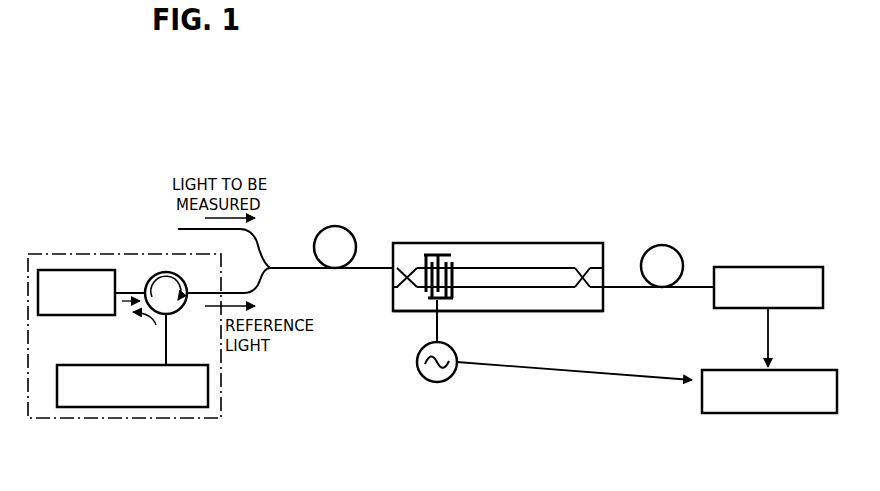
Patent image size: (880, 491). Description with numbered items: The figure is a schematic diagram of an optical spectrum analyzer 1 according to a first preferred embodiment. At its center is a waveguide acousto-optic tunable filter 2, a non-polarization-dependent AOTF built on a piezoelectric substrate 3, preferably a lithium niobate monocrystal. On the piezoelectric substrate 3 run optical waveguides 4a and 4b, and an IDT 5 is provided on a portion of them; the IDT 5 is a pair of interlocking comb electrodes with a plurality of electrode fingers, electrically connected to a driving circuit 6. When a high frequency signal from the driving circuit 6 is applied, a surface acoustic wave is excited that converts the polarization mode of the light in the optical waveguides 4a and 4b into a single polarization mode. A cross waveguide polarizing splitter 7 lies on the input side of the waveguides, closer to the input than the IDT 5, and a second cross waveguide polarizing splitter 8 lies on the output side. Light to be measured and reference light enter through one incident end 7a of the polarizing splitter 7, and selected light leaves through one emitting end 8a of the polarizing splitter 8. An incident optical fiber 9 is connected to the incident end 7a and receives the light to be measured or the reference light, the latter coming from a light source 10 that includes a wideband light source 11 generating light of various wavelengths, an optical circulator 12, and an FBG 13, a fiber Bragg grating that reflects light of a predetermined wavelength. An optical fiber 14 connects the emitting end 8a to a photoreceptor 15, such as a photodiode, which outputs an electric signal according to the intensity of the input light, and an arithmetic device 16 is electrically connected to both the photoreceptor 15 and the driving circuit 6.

The optical spectrum analyzer 1 is at (62, 114).
The waveguide acousto-optic tunable filter 2 is at (524, 240).
The piezoelectric substrate 3 is at (556, 243).
The optical waveguide 4a is at (468, 267).
The optical waveguide 4b is at (495, 289).
The IDT 5 is at (452, 302).
The driving circuit 6 is at (425, 382).
The cross waveguide polarizing splitter 7 is at (408, 262).
The incident end 7a is at (397, 288).
The cross waveguide polarizing splitter 8 is at (586, 268).
The emitting end 8a is at (604, 292).
The incident optical fiber 9 is at (334, 226).
The light source 10 is at (100, 420).
The wideband light source 11 is at (60, 408).
The optical circulator 12 is at (161, 272).
The FBG 13 is at (50, 270).
The optical fiber 14 is at (678, 252).
The photoreceptor 15 is at (773, 267).
The arithmetic device 16 is at (725, 413).